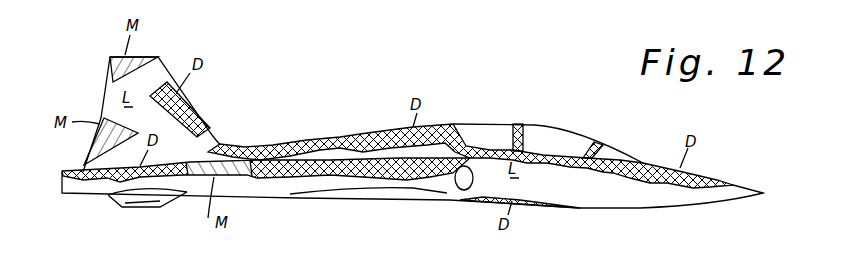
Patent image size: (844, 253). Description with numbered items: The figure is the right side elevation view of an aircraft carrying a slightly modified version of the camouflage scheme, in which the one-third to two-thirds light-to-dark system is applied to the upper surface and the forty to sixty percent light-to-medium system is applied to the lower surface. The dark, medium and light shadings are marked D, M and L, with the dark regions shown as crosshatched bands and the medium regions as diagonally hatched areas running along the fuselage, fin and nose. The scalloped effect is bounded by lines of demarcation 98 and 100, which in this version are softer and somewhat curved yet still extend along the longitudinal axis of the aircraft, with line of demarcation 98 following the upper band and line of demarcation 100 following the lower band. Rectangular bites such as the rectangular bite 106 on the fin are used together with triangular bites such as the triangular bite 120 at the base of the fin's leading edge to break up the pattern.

The line of demarcation 98 is at (362, 152).
The line of demarcation 100 is at (318, 173).
The rectangular bite 106 is at (197, 110).
The triangular bite 120 is at (93, 140).